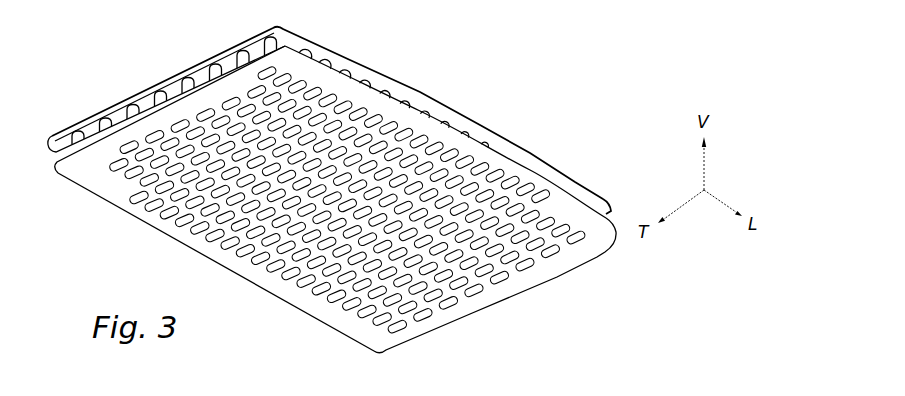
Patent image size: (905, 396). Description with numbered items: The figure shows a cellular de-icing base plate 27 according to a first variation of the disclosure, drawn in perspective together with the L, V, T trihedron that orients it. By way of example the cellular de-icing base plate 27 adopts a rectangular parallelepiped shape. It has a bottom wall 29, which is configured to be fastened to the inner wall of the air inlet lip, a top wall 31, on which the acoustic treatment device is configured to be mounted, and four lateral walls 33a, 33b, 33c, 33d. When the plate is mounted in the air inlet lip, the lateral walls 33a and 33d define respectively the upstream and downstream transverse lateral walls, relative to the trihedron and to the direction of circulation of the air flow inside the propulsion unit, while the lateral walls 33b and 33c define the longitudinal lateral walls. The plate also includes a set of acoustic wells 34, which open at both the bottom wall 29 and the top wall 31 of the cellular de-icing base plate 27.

The cellular de-icing base plate 27 is at (583, 118).
The bottom wall 29 is at (453, 288).
The top wall 31 is at (452, 88).
The lateral wall 33a is at (362, 62).
The lateral wall 33b is at (100, 120).
The lateral wall 33c is at (575, 283).
The lateral wall 33d is at (140, 228).
The acoustic wells 34 is at (271, 268).